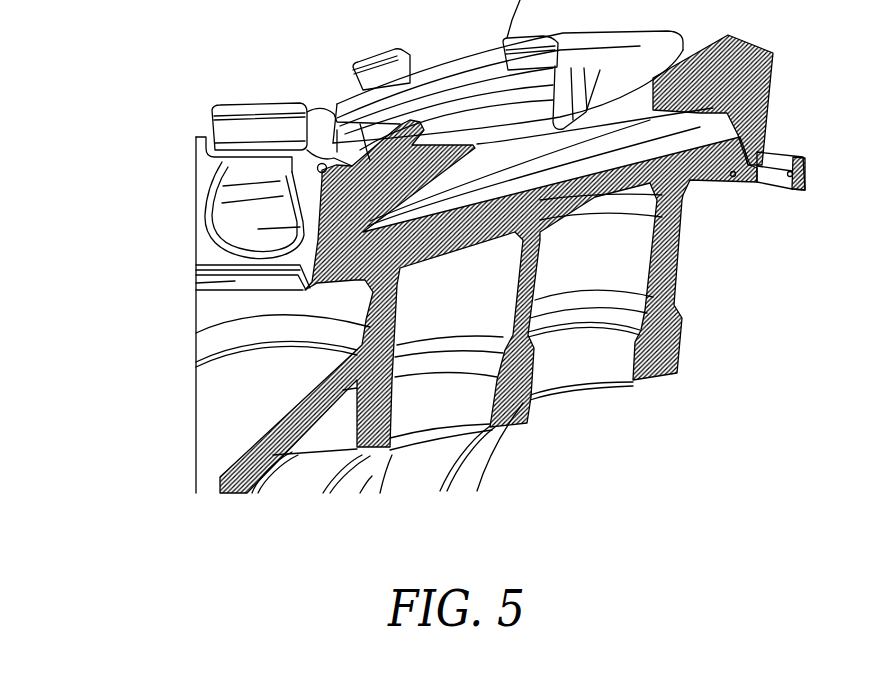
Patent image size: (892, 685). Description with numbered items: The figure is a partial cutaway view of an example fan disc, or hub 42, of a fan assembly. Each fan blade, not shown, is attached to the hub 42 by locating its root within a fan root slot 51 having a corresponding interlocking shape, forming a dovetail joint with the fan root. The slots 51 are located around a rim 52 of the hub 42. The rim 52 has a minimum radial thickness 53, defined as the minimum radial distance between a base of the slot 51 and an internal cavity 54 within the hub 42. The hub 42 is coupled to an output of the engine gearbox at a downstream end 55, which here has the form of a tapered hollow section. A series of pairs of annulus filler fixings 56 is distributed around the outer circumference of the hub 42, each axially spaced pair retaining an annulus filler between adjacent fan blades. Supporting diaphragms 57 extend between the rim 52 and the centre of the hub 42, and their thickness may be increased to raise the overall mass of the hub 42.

The hub 42 is at (178, 58).
The fan root slot 51 is at (230, 215).
The rim 52 is at (223, 257).
The minimum radial thickness 53 is at (665, 232).
The internal cavity 54 is at (595, 137).
The downstream end 55 is at (222, 415).
The annulus filler fixings 56 is at (293, 115).
The supporting diaphragms 57 is at (386, 394).